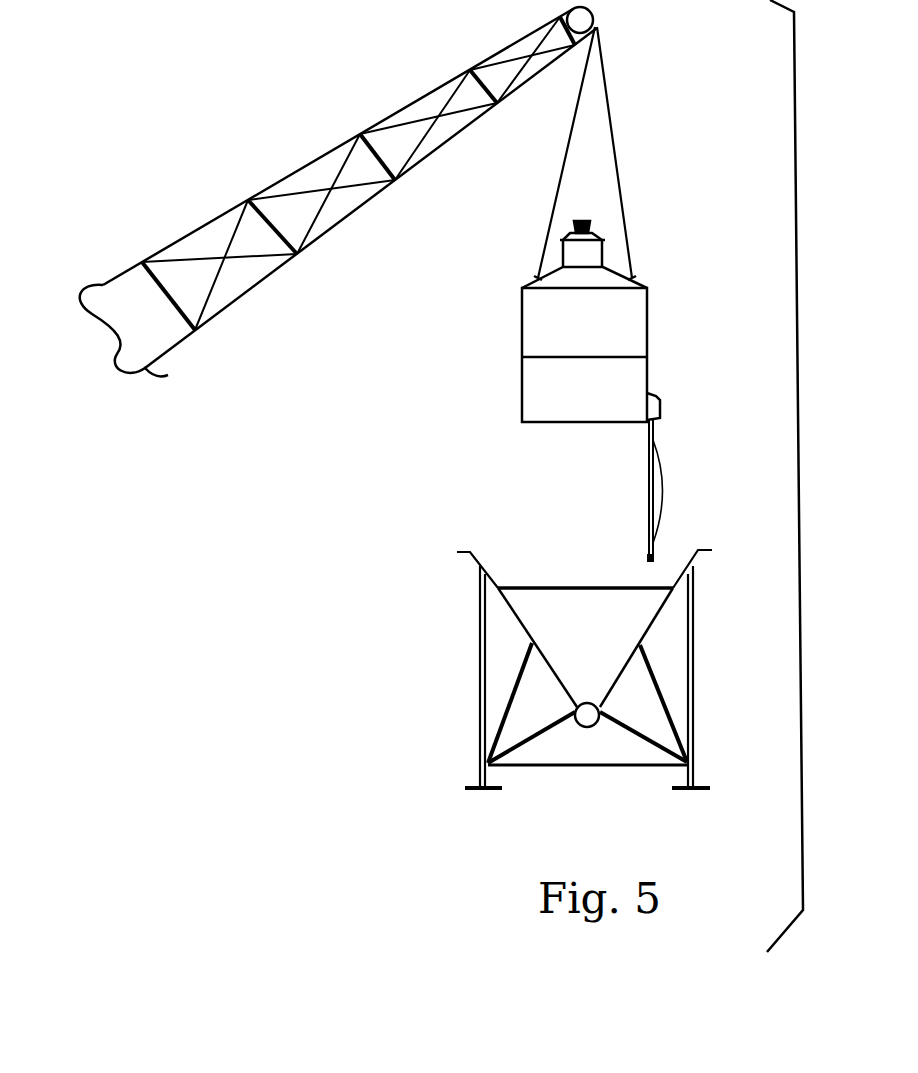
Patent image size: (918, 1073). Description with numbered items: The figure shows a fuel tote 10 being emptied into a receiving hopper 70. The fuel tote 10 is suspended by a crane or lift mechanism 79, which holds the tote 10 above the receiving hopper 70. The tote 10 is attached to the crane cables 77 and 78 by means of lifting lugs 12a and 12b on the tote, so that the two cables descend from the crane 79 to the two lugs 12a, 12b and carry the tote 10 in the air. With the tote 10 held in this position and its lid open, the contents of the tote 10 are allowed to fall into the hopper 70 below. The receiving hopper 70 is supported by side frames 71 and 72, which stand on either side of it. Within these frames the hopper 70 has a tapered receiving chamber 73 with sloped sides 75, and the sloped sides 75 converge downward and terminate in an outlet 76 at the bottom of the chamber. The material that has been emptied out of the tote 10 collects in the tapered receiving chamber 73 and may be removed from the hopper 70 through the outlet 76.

The fuel tote 10 is at (708, 357).
The lifting lug 12a is at (632, 278).
The lifting lug 12b is at (538, 278).
The receiving hopper 70 is at (780, 701).
The side frame 71 is at (693, 643).
The side frame 72 is at (480, 673).
The tapered receiving chamber 73 is at (589, 583).
The sloped sides 75 is at (511, 609).
The outlet 76 is at (587, 718).
The crane cable 77 is at (620, 180).
The crane cable 78 is at (560, 177).
The crane or lift mechanism 79 is at (362, 207).